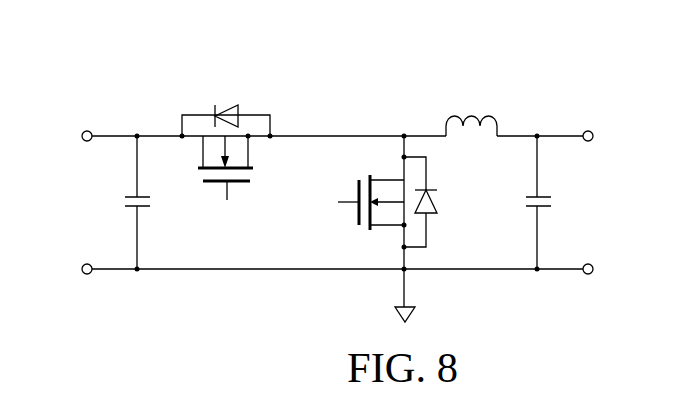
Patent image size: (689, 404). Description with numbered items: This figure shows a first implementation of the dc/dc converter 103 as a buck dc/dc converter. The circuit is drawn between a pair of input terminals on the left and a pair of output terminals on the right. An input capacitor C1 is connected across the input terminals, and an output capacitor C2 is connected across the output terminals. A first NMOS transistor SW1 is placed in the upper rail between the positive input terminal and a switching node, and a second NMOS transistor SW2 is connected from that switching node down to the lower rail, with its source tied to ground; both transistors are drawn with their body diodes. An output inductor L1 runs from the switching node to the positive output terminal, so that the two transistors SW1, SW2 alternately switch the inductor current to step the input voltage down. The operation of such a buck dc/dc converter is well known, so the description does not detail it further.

The dc/dc converter 103 is at (541, 63).
The input capacitor C1 is at (122, 202).
The output capacitor C2 is at (521, 202).
The output inductor L1 is at (471, 115).
The first NMOS transistor SW1 is at (226, 167).
The second NMOS transistor SW2 is at (364, 221).